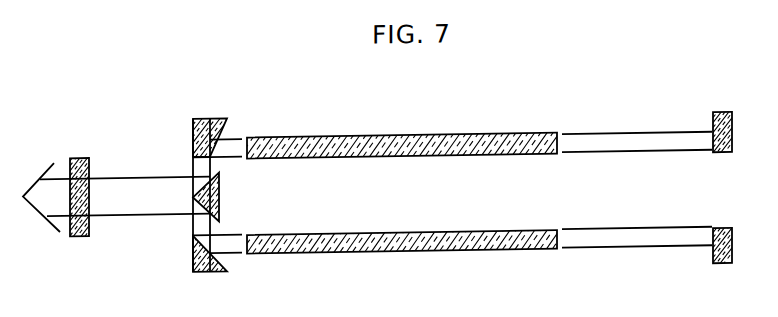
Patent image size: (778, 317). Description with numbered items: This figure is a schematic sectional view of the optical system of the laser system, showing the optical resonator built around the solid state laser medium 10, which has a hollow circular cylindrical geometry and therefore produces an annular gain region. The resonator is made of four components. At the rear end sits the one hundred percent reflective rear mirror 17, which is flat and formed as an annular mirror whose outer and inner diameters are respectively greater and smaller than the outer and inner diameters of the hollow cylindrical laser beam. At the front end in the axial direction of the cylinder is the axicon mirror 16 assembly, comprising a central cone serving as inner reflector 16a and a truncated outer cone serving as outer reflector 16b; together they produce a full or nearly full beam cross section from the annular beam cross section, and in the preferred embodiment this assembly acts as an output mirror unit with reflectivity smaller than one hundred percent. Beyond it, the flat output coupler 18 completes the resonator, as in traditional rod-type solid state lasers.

The solid state laser medium 10 is at (498, 138).
The axicon mirror assembly 16 is at (251, 118).
The central cone (inner reflector) 16a is at (220, 194).
The truncated outer cone (outer reflector) 16b is at (209, 118).
The rear mirror 17 is at (720, 160).
The output coupler 18 is at (84, 156).